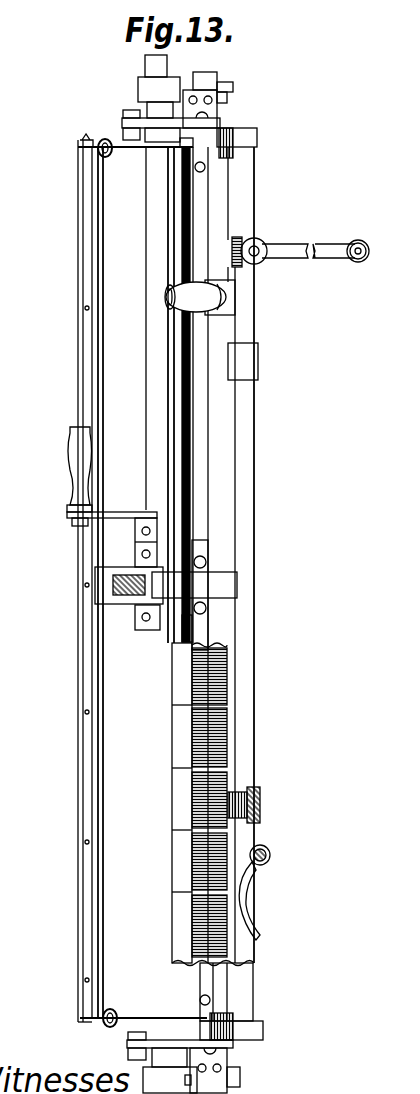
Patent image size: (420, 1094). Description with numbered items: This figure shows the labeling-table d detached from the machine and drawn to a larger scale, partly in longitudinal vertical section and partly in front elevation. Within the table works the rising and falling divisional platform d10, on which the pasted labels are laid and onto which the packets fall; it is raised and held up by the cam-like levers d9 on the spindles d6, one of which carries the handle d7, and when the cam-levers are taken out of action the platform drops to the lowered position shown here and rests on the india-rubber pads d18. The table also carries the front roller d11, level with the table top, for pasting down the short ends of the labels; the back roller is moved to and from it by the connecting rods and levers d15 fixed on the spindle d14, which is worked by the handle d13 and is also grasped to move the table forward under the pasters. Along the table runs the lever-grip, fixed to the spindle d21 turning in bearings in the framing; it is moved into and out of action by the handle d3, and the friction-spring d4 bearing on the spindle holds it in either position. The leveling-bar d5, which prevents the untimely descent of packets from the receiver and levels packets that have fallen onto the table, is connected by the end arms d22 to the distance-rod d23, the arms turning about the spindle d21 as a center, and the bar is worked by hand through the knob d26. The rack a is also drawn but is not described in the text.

The labeling-table d is at (246, 474).
The rack a is at (226, 678).
The handle d3 is at (75, 462).
The friction-spring d4 is at (130, 590).
The leveling-bar d5 is at (85, 252).
The spindle d6 is at (271, 856).
The handle d7 is at (300, 242).
The cam-like lever d9 is at (262, 930).
The rising and falling divisional platform d10 is at (228, 704).
The front roller d11 is at (178, 790).
The handle d13 is at (200, 297).
The spindle d14 is at (223, 207).
The connecting rods and levers d15 is at (222, 122).
The india-rubber pad d18 is at (256, 364).
The spindle d21 is at (154, 452).
The end arm d22 is at (132, 150).
The distance-rod d23 is at (186, 250).
The hand button or knob d26 is at (96, 1042).